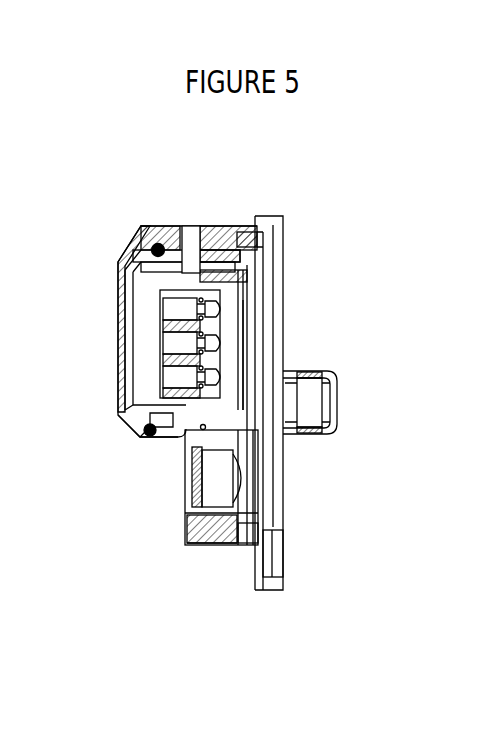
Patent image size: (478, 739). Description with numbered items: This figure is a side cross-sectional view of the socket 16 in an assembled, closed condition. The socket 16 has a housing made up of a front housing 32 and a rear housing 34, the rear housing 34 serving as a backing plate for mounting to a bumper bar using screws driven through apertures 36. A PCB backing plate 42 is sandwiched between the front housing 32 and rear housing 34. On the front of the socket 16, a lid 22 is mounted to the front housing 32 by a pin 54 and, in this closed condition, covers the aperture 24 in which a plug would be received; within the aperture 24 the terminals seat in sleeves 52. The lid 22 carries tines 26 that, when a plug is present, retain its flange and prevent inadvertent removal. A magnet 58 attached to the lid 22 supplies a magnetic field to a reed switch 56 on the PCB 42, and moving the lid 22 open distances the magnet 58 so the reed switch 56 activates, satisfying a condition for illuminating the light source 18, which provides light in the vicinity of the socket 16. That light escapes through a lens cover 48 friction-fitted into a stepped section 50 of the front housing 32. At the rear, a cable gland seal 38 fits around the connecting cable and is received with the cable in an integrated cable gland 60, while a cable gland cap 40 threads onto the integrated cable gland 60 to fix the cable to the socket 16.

The socket 16 is at (327, 203).
The light source 18 is at (181, 532).
The lid 22 is at (118, 352).
The aperture 24 is at (179, 287).
The tines 26 is at (117, 393).
The front housing 32 is at (200, 432).
The rear housing 34 is at (263, 353).
The apertures 36 is at (260, 570).
The cable gland seal 38 is at (308, 436).
The cable gland cap 40 is at (326, 437).
The PCB backing plate 42 is at (243, 307).
The lens cover 48 is at (186, 478).
The stepped section 50 is at (190, 500).
The sleeves 52 is at (189, 292).
The pin 54 is at (160, 243).
The reed switch 56 is at (226, 516).
The magnet 58 is at (143, 435).
The integrated cable gland 60 is at (308, 371).